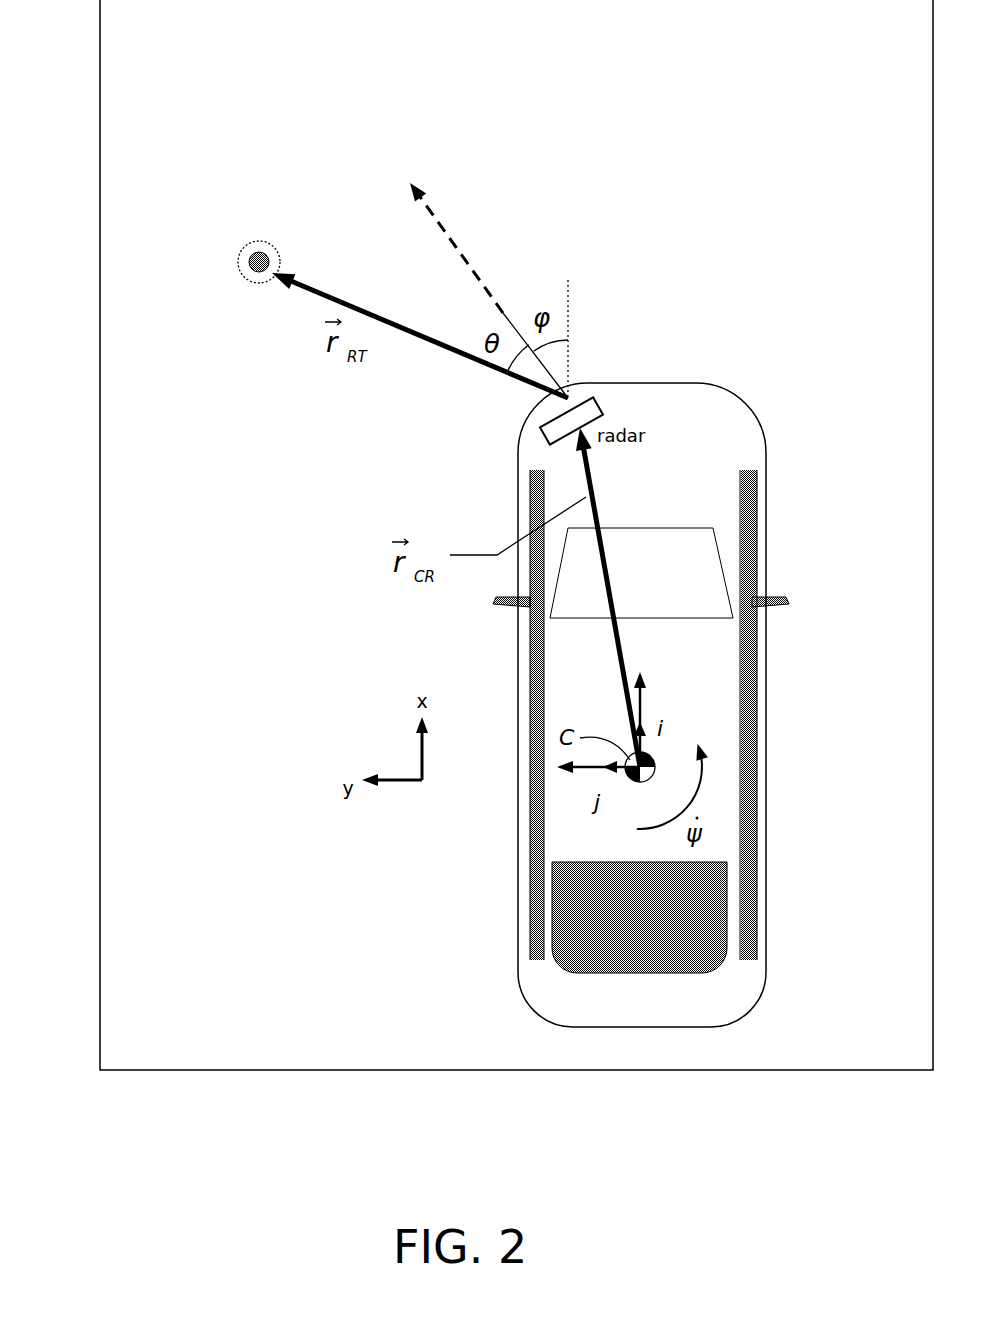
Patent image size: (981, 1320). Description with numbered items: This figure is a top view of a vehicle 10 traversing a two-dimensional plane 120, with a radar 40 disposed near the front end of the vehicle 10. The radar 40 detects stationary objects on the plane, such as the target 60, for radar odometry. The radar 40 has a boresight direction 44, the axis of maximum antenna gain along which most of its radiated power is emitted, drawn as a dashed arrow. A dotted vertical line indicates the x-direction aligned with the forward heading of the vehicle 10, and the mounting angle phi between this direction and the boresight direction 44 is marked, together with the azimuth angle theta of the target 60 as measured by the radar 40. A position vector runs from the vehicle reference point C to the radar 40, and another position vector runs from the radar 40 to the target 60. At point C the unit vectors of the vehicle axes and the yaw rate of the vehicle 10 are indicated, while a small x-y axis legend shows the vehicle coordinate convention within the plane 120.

The vehicle 10 is at (747, 384).
The radar 40 is at (592, 395).
The boresight direction 44 is at (460, 250).
The target 60 is at (247, 236).
The 2D plane 120 is at (118, 992).